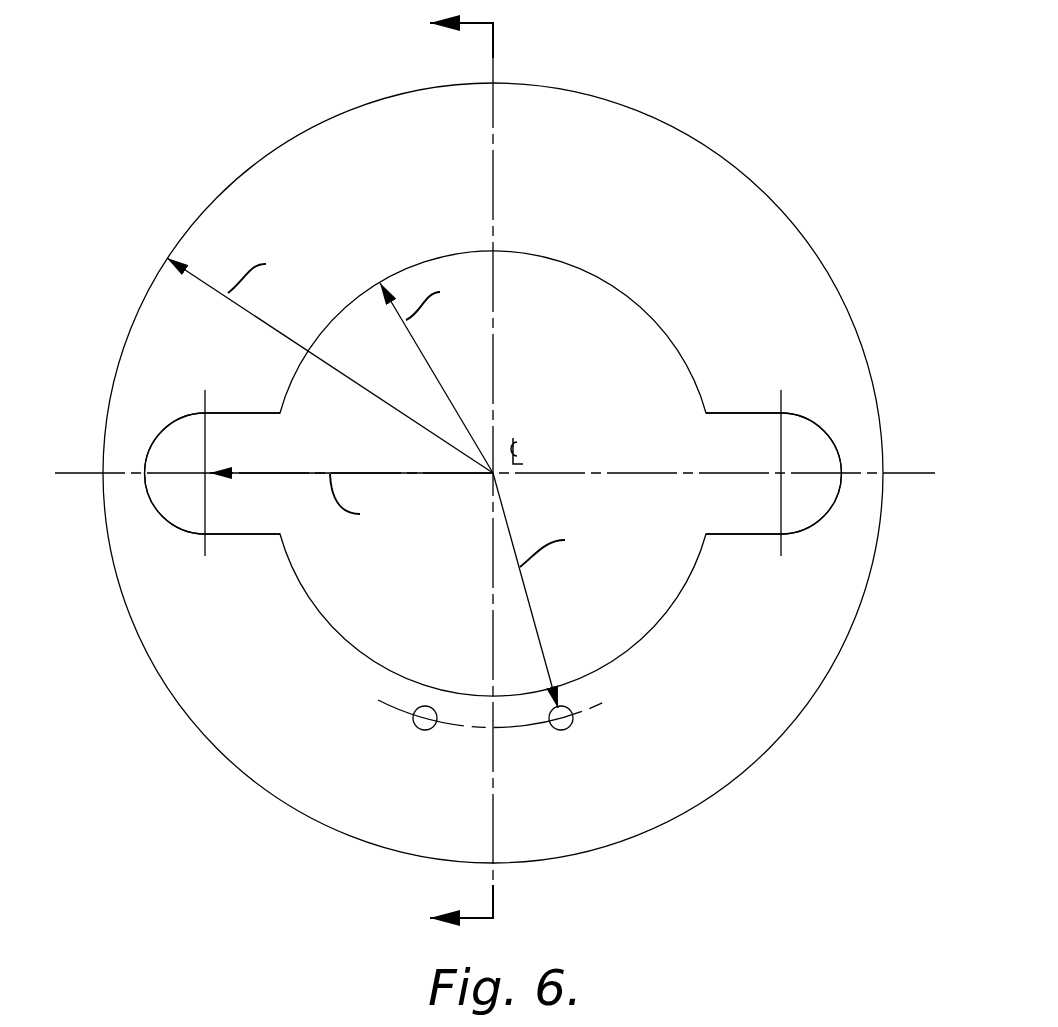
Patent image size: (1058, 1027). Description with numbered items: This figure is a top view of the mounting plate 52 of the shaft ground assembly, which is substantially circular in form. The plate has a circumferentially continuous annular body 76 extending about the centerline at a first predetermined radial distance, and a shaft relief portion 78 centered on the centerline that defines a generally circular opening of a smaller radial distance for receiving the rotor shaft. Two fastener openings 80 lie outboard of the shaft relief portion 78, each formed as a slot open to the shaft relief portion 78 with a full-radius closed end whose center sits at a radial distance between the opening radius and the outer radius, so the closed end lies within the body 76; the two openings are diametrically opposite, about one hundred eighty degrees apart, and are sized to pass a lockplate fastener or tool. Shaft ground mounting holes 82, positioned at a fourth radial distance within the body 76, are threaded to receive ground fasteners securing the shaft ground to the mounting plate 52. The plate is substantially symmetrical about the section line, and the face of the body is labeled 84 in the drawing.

The mounting plate 52 is at (783, 97).
The annular body 76 is at (301, 130).
The shaft relief portion 78 is at (377, 621).
The fastener openings 80 is at (808, 428).
The shaft ground mounting holes 82 is at (430, 728).
The disc body 84 is at (611, 126).